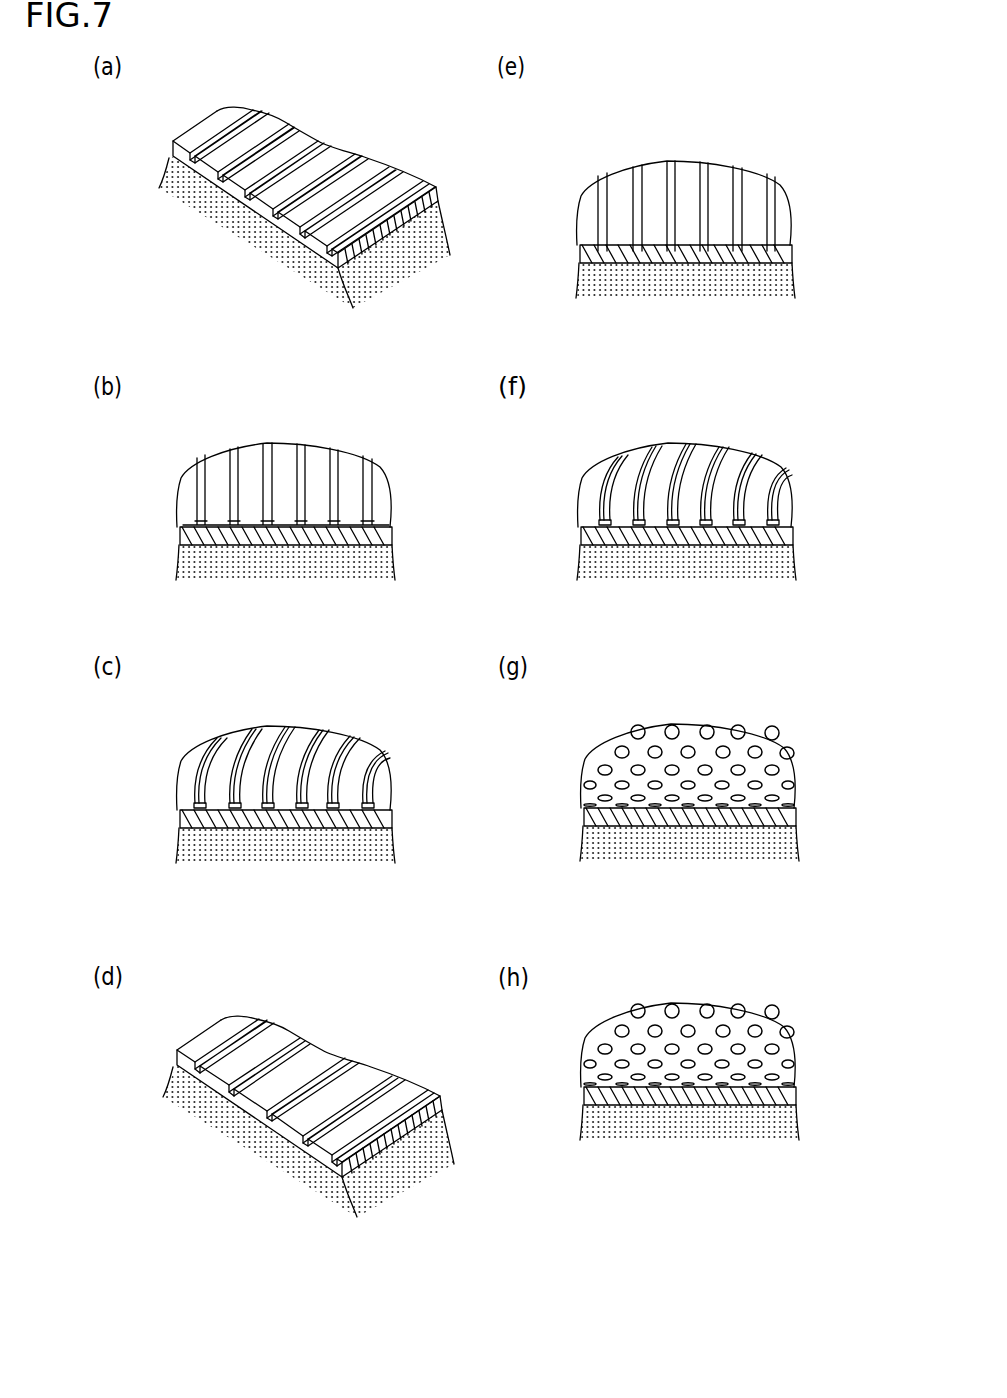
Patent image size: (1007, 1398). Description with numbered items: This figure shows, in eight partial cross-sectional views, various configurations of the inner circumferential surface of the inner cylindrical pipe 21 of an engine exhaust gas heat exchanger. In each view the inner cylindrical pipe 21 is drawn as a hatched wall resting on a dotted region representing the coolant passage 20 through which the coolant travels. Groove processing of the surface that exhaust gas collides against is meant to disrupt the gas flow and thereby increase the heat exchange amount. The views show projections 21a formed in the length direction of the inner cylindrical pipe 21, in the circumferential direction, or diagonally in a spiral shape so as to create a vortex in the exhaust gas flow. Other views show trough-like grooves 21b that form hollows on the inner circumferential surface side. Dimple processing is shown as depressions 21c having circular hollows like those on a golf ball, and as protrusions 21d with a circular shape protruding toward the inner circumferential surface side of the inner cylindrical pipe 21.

The coolant passage 20 is at (235, 238).
The inner cylindrical pipe 21 is at (173, 152).
The projections 21a is at (290, 127).
The trough-like grooves 21b is at (218, 1098).
The depressions 21c is at (722, 765).
The protrusions 21d is at (721, 1044).